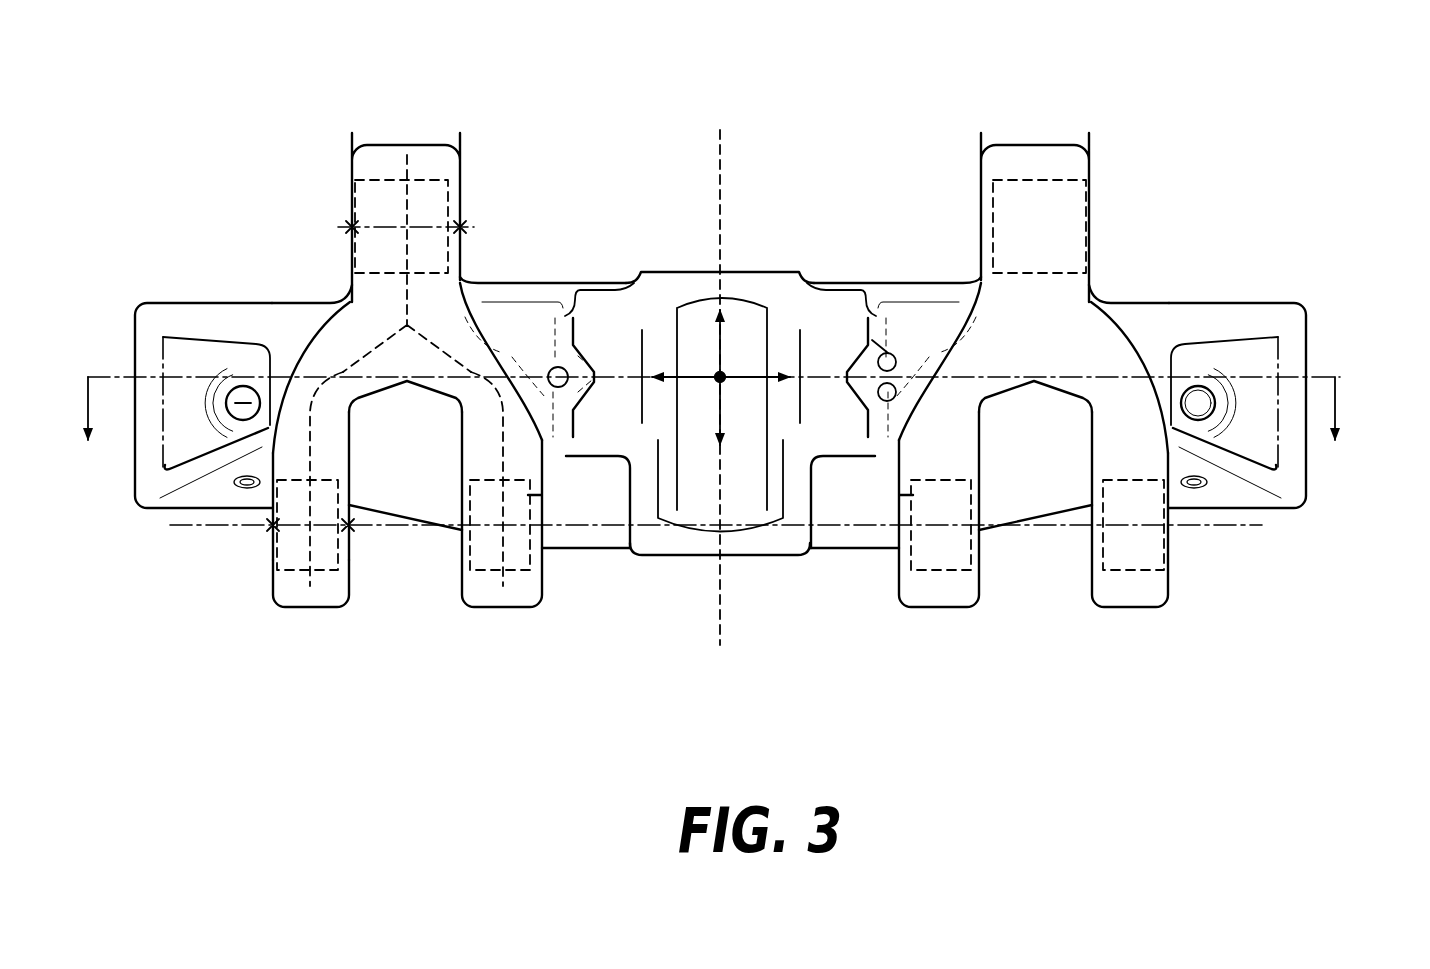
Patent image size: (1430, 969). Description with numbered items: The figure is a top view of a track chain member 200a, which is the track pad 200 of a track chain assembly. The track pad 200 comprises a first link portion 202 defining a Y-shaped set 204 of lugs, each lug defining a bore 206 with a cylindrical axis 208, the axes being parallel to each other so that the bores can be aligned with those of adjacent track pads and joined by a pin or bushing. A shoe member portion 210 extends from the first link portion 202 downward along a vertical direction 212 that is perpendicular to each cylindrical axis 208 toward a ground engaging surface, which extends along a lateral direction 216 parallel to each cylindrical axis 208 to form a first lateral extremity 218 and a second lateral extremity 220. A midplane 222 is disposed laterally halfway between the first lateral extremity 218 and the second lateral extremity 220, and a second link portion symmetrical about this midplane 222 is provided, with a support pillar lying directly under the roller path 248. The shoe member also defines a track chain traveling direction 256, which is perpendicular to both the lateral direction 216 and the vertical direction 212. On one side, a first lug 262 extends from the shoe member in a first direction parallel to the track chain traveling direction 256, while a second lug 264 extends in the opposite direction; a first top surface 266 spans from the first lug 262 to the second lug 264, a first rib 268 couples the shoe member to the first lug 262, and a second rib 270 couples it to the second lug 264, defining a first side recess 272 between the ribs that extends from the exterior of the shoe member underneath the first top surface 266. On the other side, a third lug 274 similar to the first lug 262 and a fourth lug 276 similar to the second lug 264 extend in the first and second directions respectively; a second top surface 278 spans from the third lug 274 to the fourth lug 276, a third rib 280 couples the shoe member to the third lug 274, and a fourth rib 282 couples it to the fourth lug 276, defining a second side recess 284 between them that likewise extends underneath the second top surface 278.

The track pad 200 is at (968, 693).
The track chain member 200a is at (1110, 116).
The first link portion 202 is at (386, 576).
The Y-shaped set of lugs 204 is at (308, 590).
The bore 206 is at (428, 158).
The cylindrical axis 208 is at (377, 227).
The shoe member portion 210 is at (1274, 523).
The vertical direction 212 is at (720, 382).
The lateral direction 216 is at (733, 514).
The first lateral extremity 218 is at (135, 333).
The second lateral extremity 220 is at (1307, 488).
The midplane 222 is at (720, 627).
The roller path 248 is at (752, 440).
The track chain traveling direction 256 is at (722, 345).
The first lug 262 is at (330, 600).
The second lug 264 is at (388, 140).
The first top surface 266 is at (527, 410).
The first rib 268 is at (192, 473).
The second rib 270 is at (213, 318).
The first side recess 272 is at (215, 395).
The third lug 274 is at (1157, 600).
The fourth lug 276 is at (1015, 152).
The second top surface 278 is at (975, 350).
The third rib 280 is at (1232, 466).
The fourth rib 282 is at (1215, 325).
The second side recess 284 is at (1238, 393).